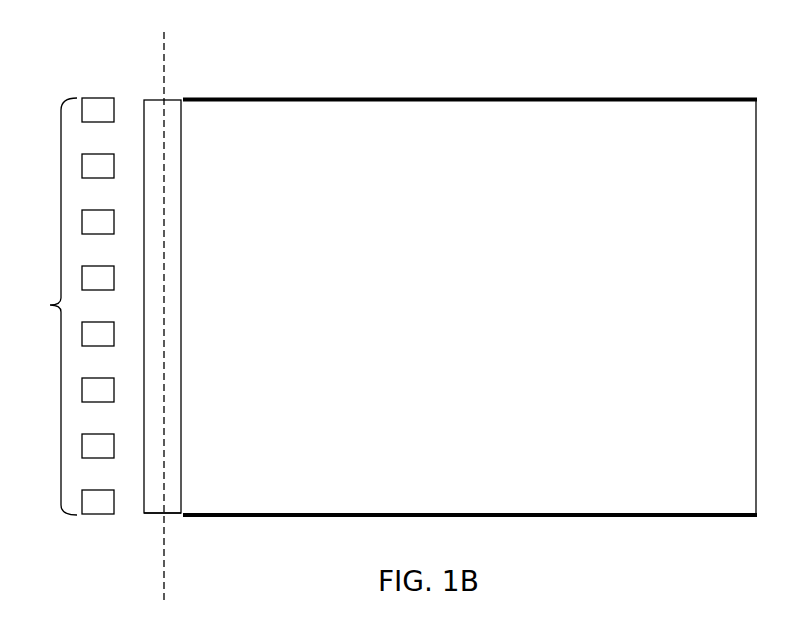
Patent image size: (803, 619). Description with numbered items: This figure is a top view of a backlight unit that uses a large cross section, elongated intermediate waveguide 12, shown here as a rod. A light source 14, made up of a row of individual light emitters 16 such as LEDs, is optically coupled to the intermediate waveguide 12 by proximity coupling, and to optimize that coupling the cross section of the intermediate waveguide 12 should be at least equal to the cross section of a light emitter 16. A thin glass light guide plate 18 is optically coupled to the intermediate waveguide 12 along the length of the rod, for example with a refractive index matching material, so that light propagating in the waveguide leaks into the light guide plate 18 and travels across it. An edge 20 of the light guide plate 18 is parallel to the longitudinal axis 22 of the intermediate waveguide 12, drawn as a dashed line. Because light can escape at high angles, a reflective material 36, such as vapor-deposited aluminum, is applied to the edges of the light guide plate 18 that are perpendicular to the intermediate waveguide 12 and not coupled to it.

The intermediate waveguide 12 is at (181, 123).
The light source 14 is at (52, 306).
The light emitter 16 is at (99, 97).
The light guide plate 18 is at (527, 113).
The edge 20 is at (178, 495).
The longitudinal axis 22 is at (165, 48).
The reflective material 36 is at (674, 98).